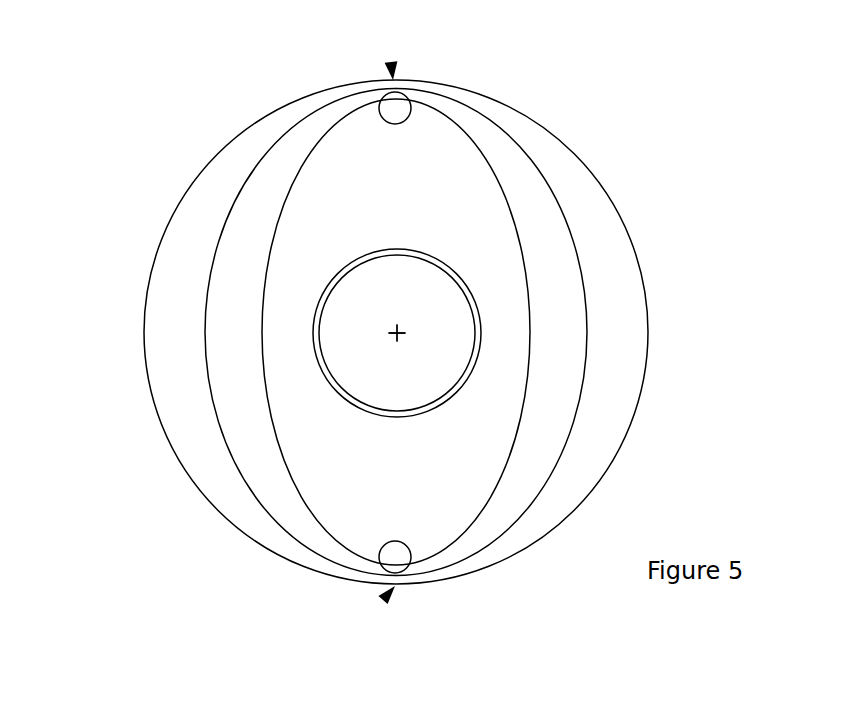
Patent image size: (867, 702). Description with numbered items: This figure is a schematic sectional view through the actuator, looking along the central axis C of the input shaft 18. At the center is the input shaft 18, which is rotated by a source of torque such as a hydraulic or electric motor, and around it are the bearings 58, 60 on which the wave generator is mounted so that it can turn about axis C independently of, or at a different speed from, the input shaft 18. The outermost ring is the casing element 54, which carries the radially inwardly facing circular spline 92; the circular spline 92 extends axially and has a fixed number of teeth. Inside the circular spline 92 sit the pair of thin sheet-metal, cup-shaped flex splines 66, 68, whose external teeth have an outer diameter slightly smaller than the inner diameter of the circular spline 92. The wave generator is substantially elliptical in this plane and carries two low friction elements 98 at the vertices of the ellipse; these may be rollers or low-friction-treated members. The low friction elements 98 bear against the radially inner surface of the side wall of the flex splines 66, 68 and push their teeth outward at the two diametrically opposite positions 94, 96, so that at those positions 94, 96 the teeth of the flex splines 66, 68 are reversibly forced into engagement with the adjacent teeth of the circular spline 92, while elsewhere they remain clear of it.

The input shaft 18 is at (443, 333).
The casing element 54 is at (463, 200).
The bearing 58 is at (468, 285).
The bearing 60 is at (552, 310).
The flex spline 66 is at (233, 200).
The flex spline 68 is at (317, 332).
The circular spline 92 is at (263, 117).
The diametrically opposite portion 94 is at (391, 63).
The diametrically opposite portion 96 is at (383, 600).
The low friction element 98 is at (412, 100).
The central axis C is at (393, 330).